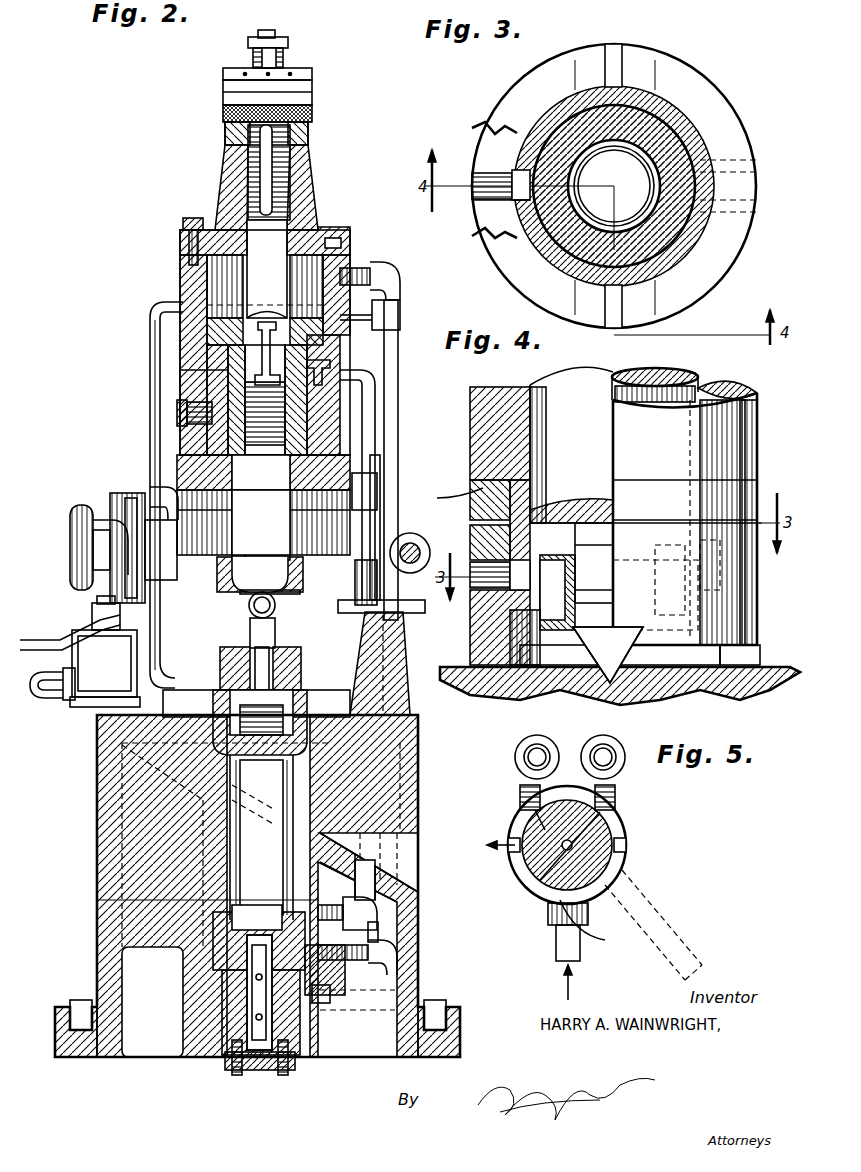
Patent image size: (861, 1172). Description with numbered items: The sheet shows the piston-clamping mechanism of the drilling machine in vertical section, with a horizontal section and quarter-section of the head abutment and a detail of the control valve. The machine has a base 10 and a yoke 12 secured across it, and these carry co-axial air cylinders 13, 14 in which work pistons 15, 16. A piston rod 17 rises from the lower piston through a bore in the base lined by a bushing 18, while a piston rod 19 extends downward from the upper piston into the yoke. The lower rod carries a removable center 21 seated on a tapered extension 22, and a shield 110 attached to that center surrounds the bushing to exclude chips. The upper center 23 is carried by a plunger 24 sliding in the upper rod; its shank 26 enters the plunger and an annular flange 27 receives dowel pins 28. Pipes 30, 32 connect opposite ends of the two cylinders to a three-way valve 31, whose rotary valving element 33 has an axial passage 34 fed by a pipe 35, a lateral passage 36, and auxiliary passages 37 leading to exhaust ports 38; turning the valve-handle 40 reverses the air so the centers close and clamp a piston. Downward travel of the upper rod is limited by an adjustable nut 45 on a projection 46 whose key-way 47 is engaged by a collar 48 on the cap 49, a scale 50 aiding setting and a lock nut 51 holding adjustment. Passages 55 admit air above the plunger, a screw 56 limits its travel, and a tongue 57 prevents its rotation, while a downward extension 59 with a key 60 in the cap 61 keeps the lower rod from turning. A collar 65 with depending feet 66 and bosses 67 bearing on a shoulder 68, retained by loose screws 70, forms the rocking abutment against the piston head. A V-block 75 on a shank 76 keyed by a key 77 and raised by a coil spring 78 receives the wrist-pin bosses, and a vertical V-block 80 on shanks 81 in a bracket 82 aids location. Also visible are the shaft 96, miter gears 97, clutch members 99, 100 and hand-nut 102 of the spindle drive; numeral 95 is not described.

In FIG. 2, the base 10 is at (97, 983).
In FIG. 2, the yoke 12 is at (183, 291).
In FIG. 2, the air cylinder 13 is at (232, 965).
In FIG. 2, the air cylinder 14 is at (180, 266).
In FIG. 2, the piston 15 is at (314, 1000).
In FIG. 2, the piston 16 is at (330, 362).
In FIG. 2, the piston rod 17 is at (257, 837).
In FIG. 2, the bushing 18 is at (229, 748).
In FIG. 2, the piston rod 19 is at (290, 410).
In FIG. 3, the piston rod 19 is at (695, 132).
In FIG. 4, the piston rod 19 is at (752, 395).
In FIG. 2, the center 21 is at (300, 662).
In FIG. 2, the tapered extension 22 is at (248, 660).
In FIG. 2, the center 23 is at (230, 556).
In FIG. 4, the center 23 is at (640, 655).
In FIG. 2, the plunger 24 is at (272, 470).
In FIG. 3, the plunger 24 is at (660, 115).
In FIG. 4, the plunger 24 is at (603, 383).
In FIG. 3, the shank 26 is at (626, 190).
In FIG. 4, the shank 26 is at (646, 555).
In FIG. 4, the annular flange 27 is at (578, 625).
In FIG. 4, the dowel pins 28 is at (548, 605).
In FIG. 2, the pipe 30 is at (368, 268).
In FIG. 5, the pipe 30 is at (522, 760).
In FIG. 2, the three-way valve 31 is at (105, 651).
In FIG. 5, the three-way valve 31 is at (626, 830).
In FIG. 2, the pipe 32 is at (375, 425).
In FIG. 5, the pipe 32 is at (618, 745).
In FIG. 5, the rotary valving element 33 is at (548, 908).
In FIG. 5, the axial passage 34 is at (522, 878).
In FIG. 5, the pipe 35 is at (556, 940).
In FIG. 5, the lateral passage 36 is at (595, 820).
In FIG. 5, the auxiliary passages 37 is at (532, 824).
In FIG. 5, the exhaust ports 38 is at (628, 845).
In FIG. 2, the valve-handle 40 is at (40, 648).
In FIG. 5, the valve-handle 40 is at (682, 945).
In FIG. 2, the adjustable nut 45 is at (223, 90).
In FIG. 2, the projection 46 is at (260, 180).
In FIG. 2, the key-way 47 is at (262, 160).
In FIG. 2, the collar 48 is at (225, 130).
In FIG. 2, the cap 49 is at (225, 200).
In FIG. 2, the scale 50 is at (248, 43).
In FIG. 2, the lock nut 51 is at (223, 74).
In FIG. 2, the passages 55 is at (278, 320).
In FIG. 2, the screw 56 is at (232, 462).
In FIG. 2, the tongue 57 is at (245, 368).
In FIG. 2, the downward extension 59 is at (250, 1015).
In FIG. 2, the key 60 is at (255, 992).
In FIG. 2, the cap 61 is at (235, 1062).
In FIG. 2, the collar 65 is at (300, 556).
In FIG. 3, the collar 65 is at (715, 265).
In FIG. 4, the collar 65 is at (470, 612).
In FIG. 3, the feet 66 is at (472, 230).
In FIG. 4, the feet 66 is at (470, 650).
In FIG. 3, the bosses 67 is at (624, 55).
In FIG. 4, the bosses 67 is at (615, 527).
In FIG. 4, the shoulder 68 is at (470, 515).
In FIG. 3, the screws 70 is at (472, 200).
In FIG. 4, the screws 70 is at (470, 568).
In FIG. 2, the V-block 75 is at (250, 630).
In FIG. 2, the shank 76 is at (258, 676).
In FIG. 2, the key 77 is at (266, 688).
In FIG. 2, the coil spring 78 is at (300, 720).
In FIG. 2, the V-block 80 is at (395, 630).
In FIG. 2, the shanks 81 is at (418, 613).
In FIG. 2, the bracket 82 is at (408, 700).
In FIG. 2, the pipe 95 is at (62, 705).
In FIG. 2, the shaft 96 is at (410, 545).
In FIG. 2, the miter gears 97 is at (423, 535).
In FIG. 4, the miter gears 97 is at (456, 485).
In FIG. 2, the friction clutch member 99 is at (118, 505).
In FIG. 2, the clutch member 100 is at (133, 496).
In FIG. 2, the hand-nut 102 is at (75, 506).
In FIG. 2, the shield 110 is at (215, 707).